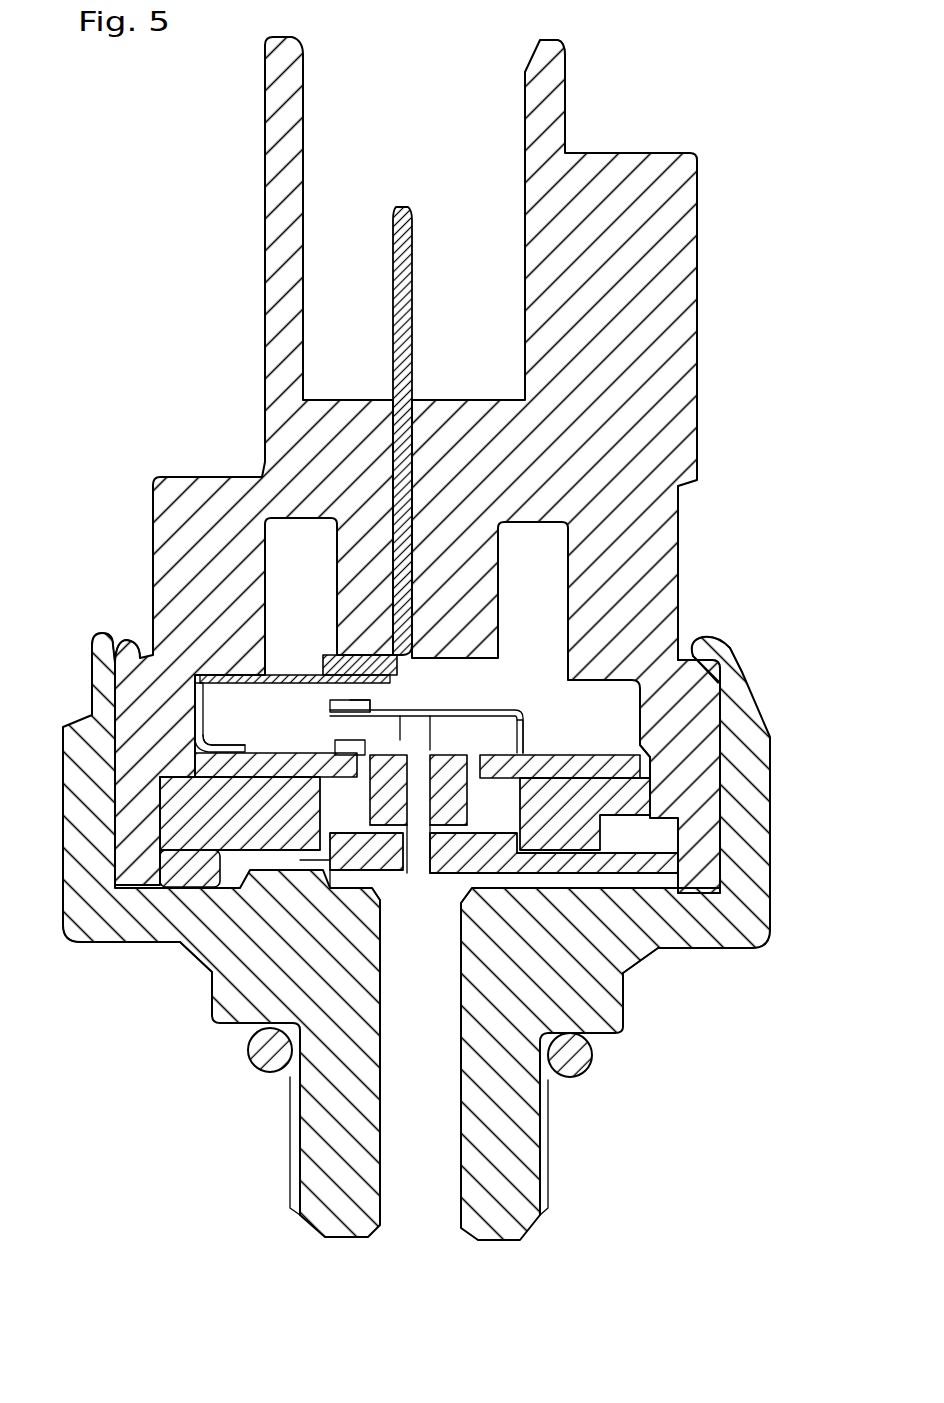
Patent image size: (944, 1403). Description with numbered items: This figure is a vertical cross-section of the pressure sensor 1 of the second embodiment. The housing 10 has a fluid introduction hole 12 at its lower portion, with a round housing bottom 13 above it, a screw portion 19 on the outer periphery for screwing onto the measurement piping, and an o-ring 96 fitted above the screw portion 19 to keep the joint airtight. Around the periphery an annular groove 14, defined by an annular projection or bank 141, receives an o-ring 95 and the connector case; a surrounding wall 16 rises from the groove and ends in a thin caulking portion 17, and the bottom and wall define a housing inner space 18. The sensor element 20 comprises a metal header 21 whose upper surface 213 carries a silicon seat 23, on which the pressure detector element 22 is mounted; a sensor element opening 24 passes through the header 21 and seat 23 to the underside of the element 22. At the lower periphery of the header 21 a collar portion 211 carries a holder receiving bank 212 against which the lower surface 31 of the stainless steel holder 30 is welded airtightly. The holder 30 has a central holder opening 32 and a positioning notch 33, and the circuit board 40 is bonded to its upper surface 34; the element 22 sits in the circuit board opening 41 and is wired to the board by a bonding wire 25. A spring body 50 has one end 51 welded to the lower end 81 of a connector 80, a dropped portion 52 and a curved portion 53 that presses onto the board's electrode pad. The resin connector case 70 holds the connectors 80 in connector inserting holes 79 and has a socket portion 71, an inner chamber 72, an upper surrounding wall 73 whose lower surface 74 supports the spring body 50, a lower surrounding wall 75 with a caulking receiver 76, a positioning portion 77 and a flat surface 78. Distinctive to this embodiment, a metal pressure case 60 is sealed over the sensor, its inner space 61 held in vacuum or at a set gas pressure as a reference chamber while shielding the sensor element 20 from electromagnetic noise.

The pressure sensor 1 is at (440, 90).
The housing 10 is at (212, 1002).
The fluid introduction hole 12 is at (415, 1190).
The housing bottom 13 is at (378, 898).
The annular groove 14 is at (120, 942).
The annular projection or bank 141 is at (190, 948).
The surrounding wall 16 is at (90, 875).
The caulking portion 17 is at (100, 640).
The housing inner space 18 is at (640, 965).
The screw portion 19 is at (292, 1165).
The sensor element 20 is at (438, 735).
The header 21 is at (403, 873).
The collar portion 211 is at (370, 870).
The holder receiving bank 212 is at (325, 860).
The upper surface 213 is at (423, 815).
The pressure detector element 22 is at (362, 716).
The silicon seat 23 is at (372, 790).
The sensor element opening 24 is at (420, 873).
The bonding wire 25 is at (522, 730).
The holder 30 is at (155, 822).
The lower surface 31 is at (222, 860).
The holder opening 32 is at (570, 756).
The positioning notch 33 is at (772, 830).
The upper surface 34 is at (276, 750).
The circuit board 40 is at (635, 748).
The circuit board opening 41 is at (347, 739).
The spring body 50 is at (346, 695).
The end 51 is at (300, 675).
The dropped portion 52 is at (200, 720).
The curved portion 53 is at (245, 738).
The pressure case 60 is at (470, 712).
The inner space 61 is at (412, 730).
The connector case 70 is at (720, 318).
The socket portion 71 is at (560, 85).
The connector case inner chamber 72 is at (680, 640).
The upper surrounding wall 73 is at (165, 540).
The lower surface 74 is at (255, 668).
The lower surrounding wall 75 is at (95, 698).
The caulking receiver 76 is at (135, 655).
The positioning portion 77 is at (720, 790).
The flat surface 78 is at (705, 888).
The connector inserting hole 79 is at (415, 440).
The connector 80 is at (400, 295).
The lower end 81 is at (355, 655).
The o-ring 95 is at (95, 900).
The o-ring 96 is at (250, 1072).